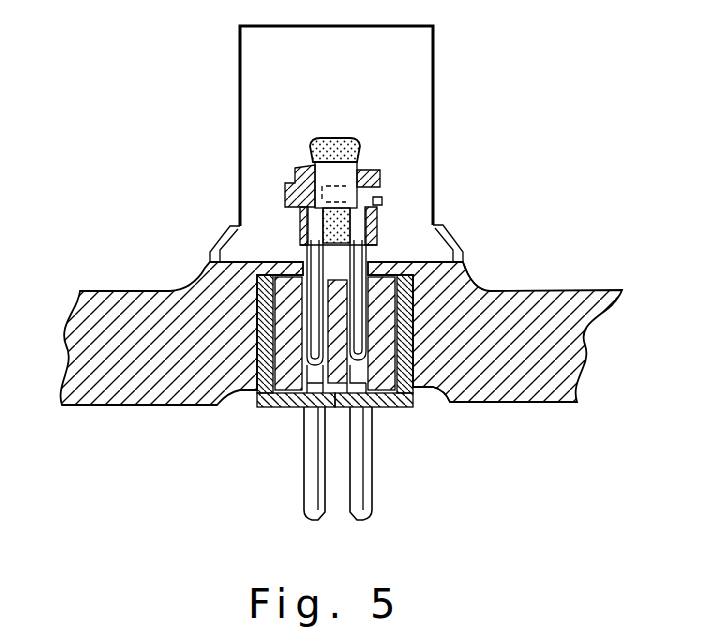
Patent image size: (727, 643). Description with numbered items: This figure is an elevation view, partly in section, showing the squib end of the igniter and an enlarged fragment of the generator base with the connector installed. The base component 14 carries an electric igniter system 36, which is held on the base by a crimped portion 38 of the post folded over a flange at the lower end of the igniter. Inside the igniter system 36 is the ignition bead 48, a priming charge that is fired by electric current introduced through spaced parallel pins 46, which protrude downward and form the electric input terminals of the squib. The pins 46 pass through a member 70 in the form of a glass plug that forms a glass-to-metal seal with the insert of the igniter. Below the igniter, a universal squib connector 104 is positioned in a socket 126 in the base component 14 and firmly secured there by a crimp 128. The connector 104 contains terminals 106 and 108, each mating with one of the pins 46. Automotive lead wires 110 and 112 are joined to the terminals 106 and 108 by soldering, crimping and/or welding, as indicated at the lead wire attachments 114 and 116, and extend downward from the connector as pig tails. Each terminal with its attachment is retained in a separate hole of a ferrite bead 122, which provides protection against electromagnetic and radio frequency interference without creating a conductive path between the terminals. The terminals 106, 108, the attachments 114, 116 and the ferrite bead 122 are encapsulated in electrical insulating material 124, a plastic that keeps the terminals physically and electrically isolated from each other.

The base component 14 is at (97, 407).
The electric igniter system 36 is at (239, 90).
The crimped portion of the post 38 is at (450, 236).
The pins 46 is at (353, 258).
The ignition bead 48 is at (310, 152).
The glass plug member 70 is at (380, 202).
The universal squib connector 104 is at (298, 420).
The terminal 106 is at (290, 292).
The terminal 108 is at (370, 350).
The lead wire 110 is at (305, 507).
The lead wire 112 is at (370, 493).
The lead wire attachment 114 is at (302, 408).
The lead wire attachment 116 is at (373, 408).
The ferrite bead 122 is at (417, 403).
The electrical insulating material 124 is at (470, 280).
The socket 126 is at (240, 398).
The crimp 128 is at (407, 408).